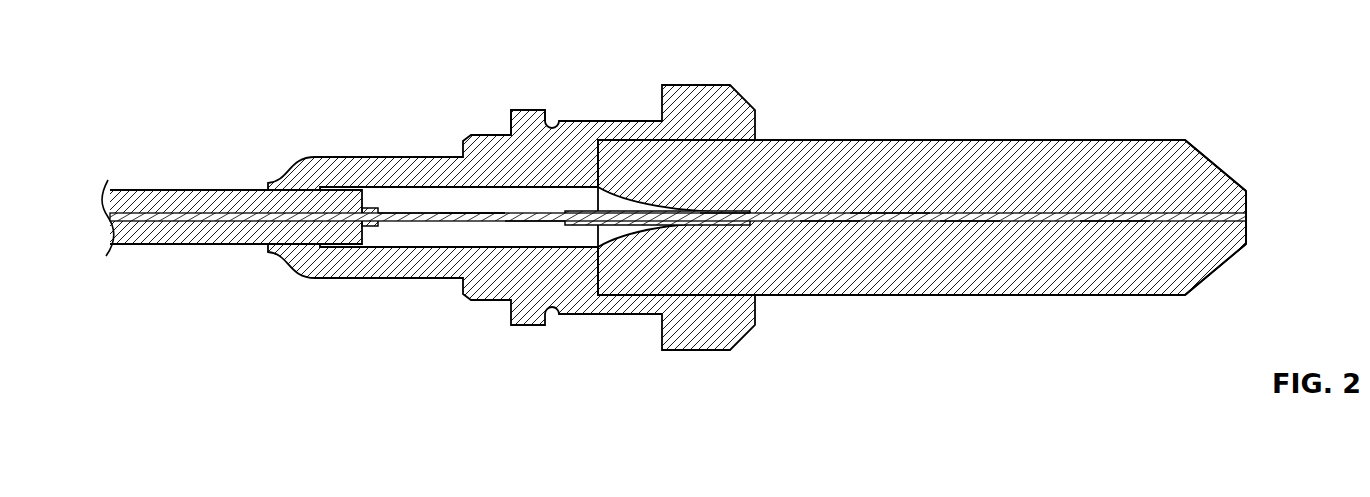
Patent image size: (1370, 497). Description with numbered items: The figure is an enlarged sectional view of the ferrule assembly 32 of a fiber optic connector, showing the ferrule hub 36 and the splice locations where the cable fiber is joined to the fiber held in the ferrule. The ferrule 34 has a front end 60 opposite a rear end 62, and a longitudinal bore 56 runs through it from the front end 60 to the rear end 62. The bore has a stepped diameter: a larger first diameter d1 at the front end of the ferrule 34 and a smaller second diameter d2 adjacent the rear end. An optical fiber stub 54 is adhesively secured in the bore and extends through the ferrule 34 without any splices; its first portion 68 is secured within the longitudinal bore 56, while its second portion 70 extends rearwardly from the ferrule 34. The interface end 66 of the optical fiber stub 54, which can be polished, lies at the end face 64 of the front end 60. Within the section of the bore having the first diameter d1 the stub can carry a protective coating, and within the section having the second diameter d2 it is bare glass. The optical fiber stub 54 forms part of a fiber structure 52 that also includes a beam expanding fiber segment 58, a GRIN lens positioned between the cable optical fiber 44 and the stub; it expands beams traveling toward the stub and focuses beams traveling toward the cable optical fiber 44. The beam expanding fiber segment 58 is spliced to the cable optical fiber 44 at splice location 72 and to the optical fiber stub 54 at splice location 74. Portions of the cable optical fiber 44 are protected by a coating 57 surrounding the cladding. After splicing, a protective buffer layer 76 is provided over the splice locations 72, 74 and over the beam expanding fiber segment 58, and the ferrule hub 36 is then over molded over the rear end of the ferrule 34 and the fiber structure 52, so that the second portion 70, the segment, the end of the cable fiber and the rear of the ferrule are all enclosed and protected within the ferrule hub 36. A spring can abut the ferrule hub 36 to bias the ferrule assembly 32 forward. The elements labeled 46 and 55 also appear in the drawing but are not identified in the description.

The ferrule assembly 32 is at (190, 48).
The ferrule 34 is at (818, 140).
The ferrule hub 36 is at (568, 120).
The cable optical fiber 44 is at (385, 226).
The coaxial cable 46 is at (130, 190).
The fiber structure 52 is at (528, 234).
The optical fiber stub 54 is at (832, 234).
The contact sleeve 55 is at (623, 212).
The longitudinal bore 56 is at (891, 202).
The coating 57 is at (368, 198).
The beam expanding fiber segment 58 is at (473, 208).
The front end 60 is at (1247, 192).
The rear end 62 is at (592, 281).
The end face 64 is at (1247, 207).
The interface end 66 is at (1247, 221).
The first portion 68 is at (962, 222).
The second portion 70 is at (553, 213).
The splice location 72 is at (443, 212).
The splice location 74 is at (505, 215).
The protective buffer layer 76 is at (336, 277).
The first diameter d1 is at (722, 212).
The second diameter d2 is at (1118, 220).